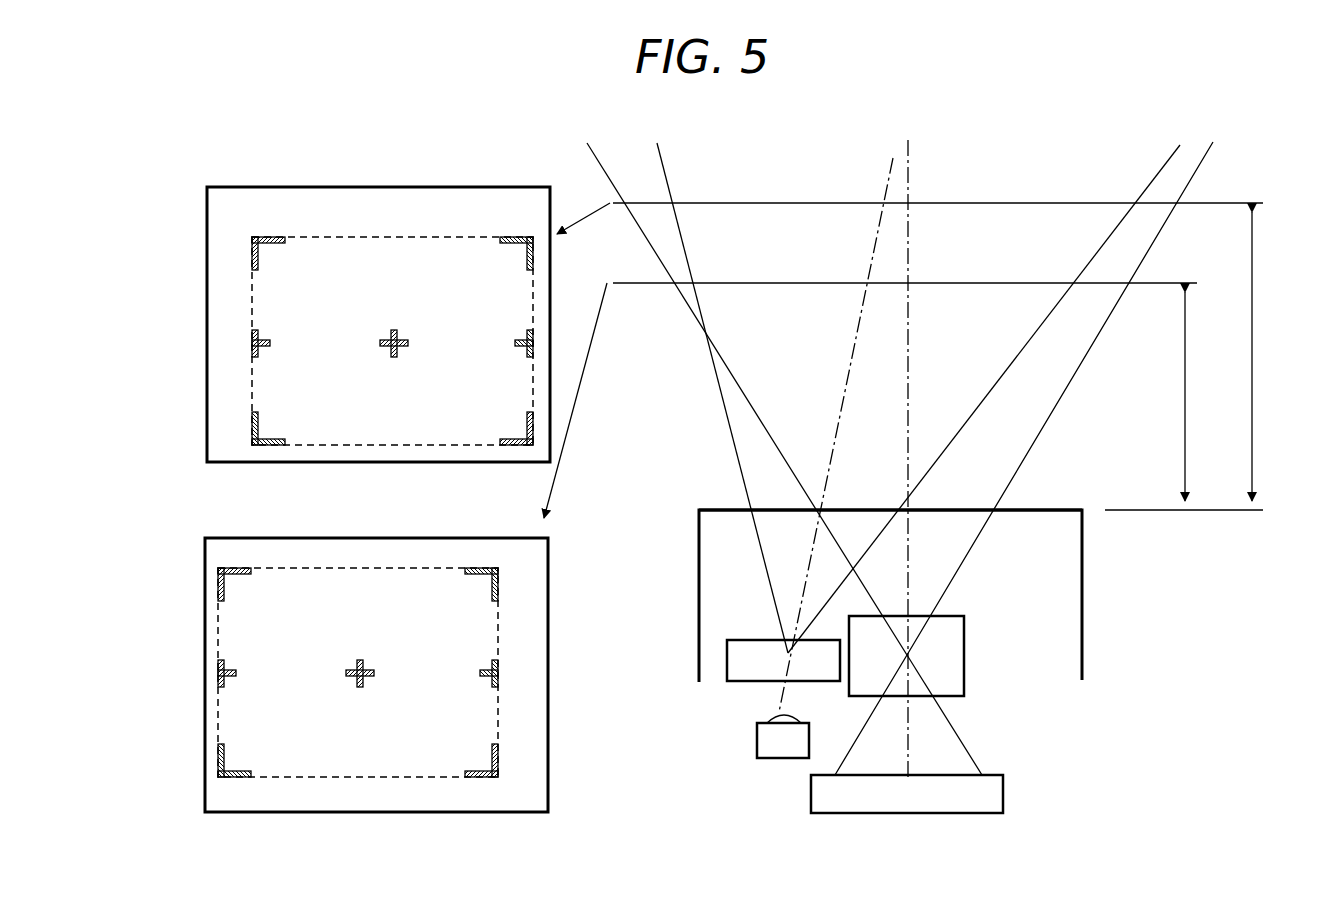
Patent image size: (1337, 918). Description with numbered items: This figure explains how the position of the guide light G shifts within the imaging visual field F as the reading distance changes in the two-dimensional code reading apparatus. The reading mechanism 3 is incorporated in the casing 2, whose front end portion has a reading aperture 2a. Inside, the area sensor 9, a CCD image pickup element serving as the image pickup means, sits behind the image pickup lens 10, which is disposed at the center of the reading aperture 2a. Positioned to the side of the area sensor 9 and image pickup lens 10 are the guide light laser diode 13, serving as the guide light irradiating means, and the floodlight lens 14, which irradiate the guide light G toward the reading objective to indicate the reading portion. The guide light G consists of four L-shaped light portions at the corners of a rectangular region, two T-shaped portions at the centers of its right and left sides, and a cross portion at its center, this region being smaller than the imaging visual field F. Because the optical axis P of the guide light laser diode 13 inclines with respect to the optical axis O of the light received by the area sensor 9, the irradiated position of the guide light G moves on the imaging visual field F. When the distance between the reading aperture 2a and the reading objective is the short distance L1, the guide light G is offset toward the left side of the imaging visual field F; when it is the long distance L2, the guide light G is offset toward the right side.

The casing 2 is at (1082, 603).
The reading aperture 2a is at (1040, 510).
The reading mechanism 3 is at (1002, 727).
The area sensor 9 is at (1003, 790).
The image pickup lens 10 is at (964, 655).
The guide light laser diode 13 is at (757, 740).
The floodlight lens 14 is at (727, 652).
The imaging visual field F is at (445, 187).
The guide light G is at (278, 237).
The optical axis of light received by the area sensor O is at (908, 158).
The optical axis of the guide light irradiating means P is at (848, 368).
The short distance L1 is at (1203, 396).
The long distance L2 is at (1268, 356).